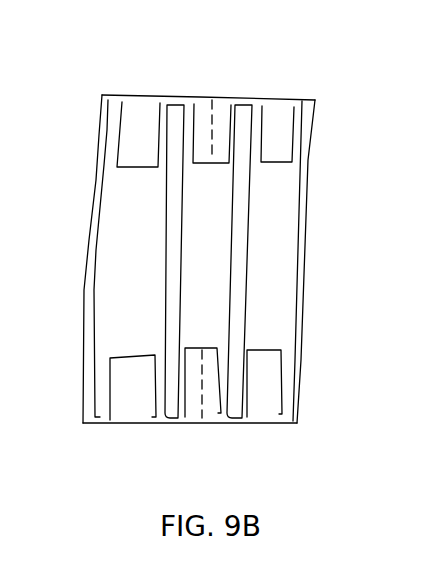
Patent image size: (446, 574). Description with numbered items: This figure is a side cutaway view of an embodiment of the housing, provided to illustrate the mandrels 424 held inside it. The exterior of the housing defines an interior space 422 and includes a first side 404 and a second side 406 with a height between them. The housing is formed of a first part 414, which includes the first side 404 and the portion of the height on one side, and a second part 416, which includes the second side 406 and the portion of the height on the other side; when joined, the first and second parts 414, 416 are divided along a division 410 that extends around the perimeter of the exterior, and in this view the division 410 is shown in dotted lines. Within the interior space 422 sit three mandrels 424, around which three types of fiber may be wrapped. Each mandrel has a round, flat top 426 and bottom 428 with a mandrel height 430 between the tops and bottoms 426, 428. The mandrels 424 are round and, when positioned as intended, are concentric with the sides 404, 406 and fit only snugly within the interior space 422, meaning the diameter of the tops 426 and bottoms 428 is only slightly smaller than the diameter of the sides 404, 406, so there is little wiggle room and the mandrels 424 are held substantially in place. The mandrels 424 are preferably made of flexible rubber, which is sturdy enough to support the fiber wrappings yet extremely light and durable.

The first side 404 is at (83, 299).
The second side 406 is at (303, 288).
The division 410 is at (202, 418).
The first part 414 is at (123, 408).
The second part 416 is at (263, 408).
The interior space 422 is at (278, 110).
The mandrels 424 is at (150, 319).
The mandrel tops 426 is at (102, 183).
The mandrel bottoms 428 is at (172, 140).
The mandrel height 430 is at (138, 134).